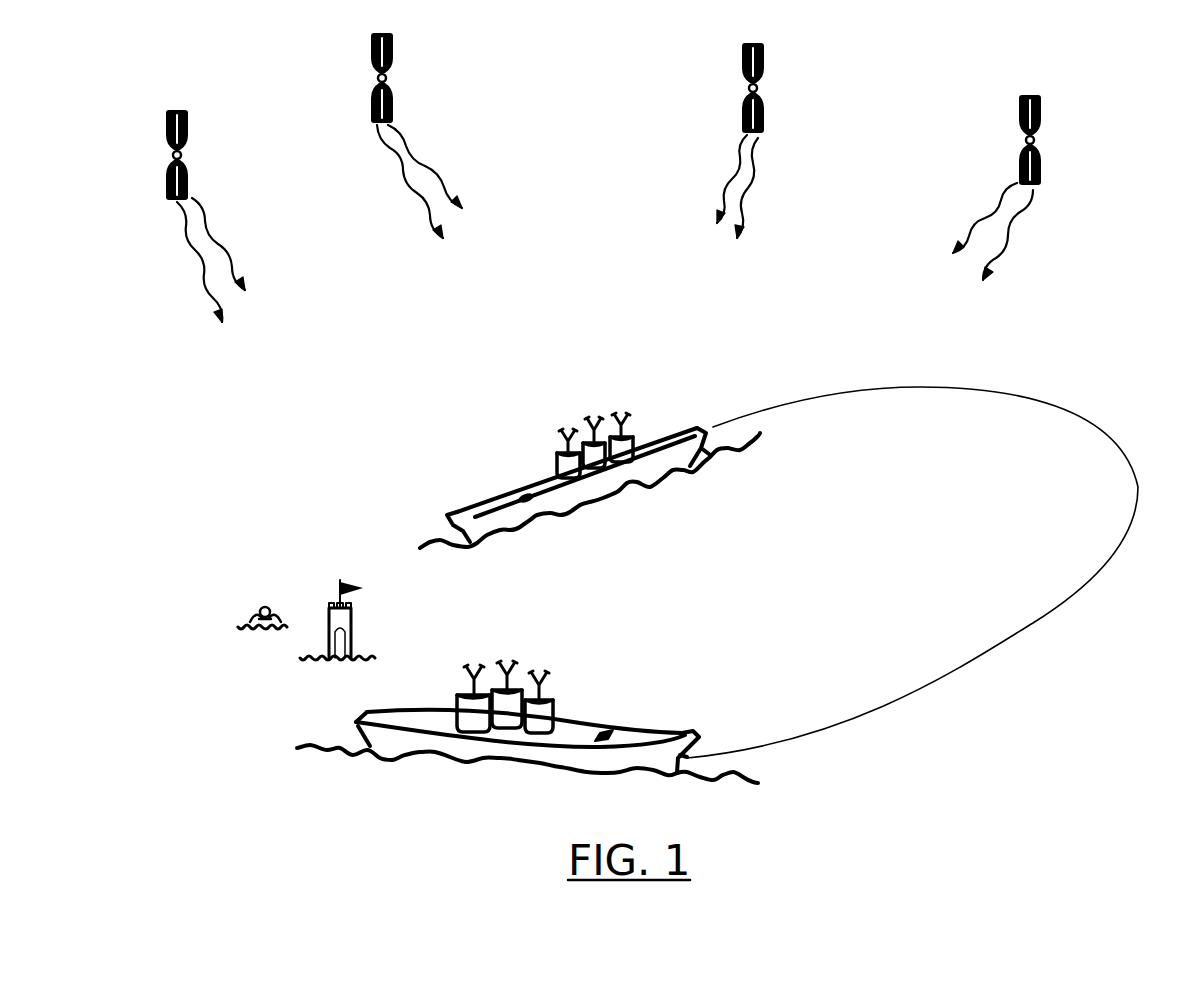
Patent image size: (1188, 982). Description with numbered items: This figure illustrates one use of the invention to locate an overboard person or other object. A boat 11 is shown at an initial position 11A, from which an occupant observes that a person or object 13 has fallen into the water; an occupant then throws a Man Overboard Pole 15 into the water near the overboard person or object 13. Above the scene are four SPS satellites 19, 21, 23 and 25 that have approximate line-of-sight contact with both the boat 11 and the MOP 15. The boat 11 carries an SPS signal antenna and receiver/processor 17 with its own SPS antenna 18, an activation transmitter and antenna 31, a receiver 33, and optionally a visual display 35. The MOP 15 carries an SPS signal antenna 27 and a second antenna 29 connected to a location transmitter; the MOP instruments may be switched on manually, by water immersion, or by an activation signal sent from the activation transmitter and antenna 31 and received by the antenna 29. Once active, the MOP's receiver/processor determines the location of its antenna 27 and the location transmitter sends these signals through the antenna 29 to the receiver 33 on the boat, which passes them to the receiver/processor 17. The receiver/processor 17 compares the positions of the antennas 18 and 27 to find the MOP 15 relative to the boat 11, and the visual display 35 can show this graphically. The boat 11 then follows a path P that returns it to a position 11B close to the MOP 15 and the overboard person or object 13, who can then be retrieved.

The boat 11 is at (697, 477).
The position of the boat 11A is at (537, 711).
The position of the boat 11B is at (630, 480).
The overboard person or object 13 is at (265, 608).
The Man Overboard Pole 15 is at (318, 663).
The SPS signal antenna and receiver/processor 17 is at (470, 717).
The SPS signal antenna 18 is at (473, 678).
The SPS satellite 19 is at (187, 120).
The SPS satellite 21 is at (388, 77).
The SPS satellite 23 is at (758, 87).
The SPS satellite 25 is at (1033, 137).
The SPS signal antenna 27 is at (332, 610).
The second antenna 29 is at (350, 608).
The activation transmitter and antenna 31 is at (505, 717).
The receiver 33 is at (537, 720).
The visual display 35 is at (610, 707).
The path P is at (912, 572).